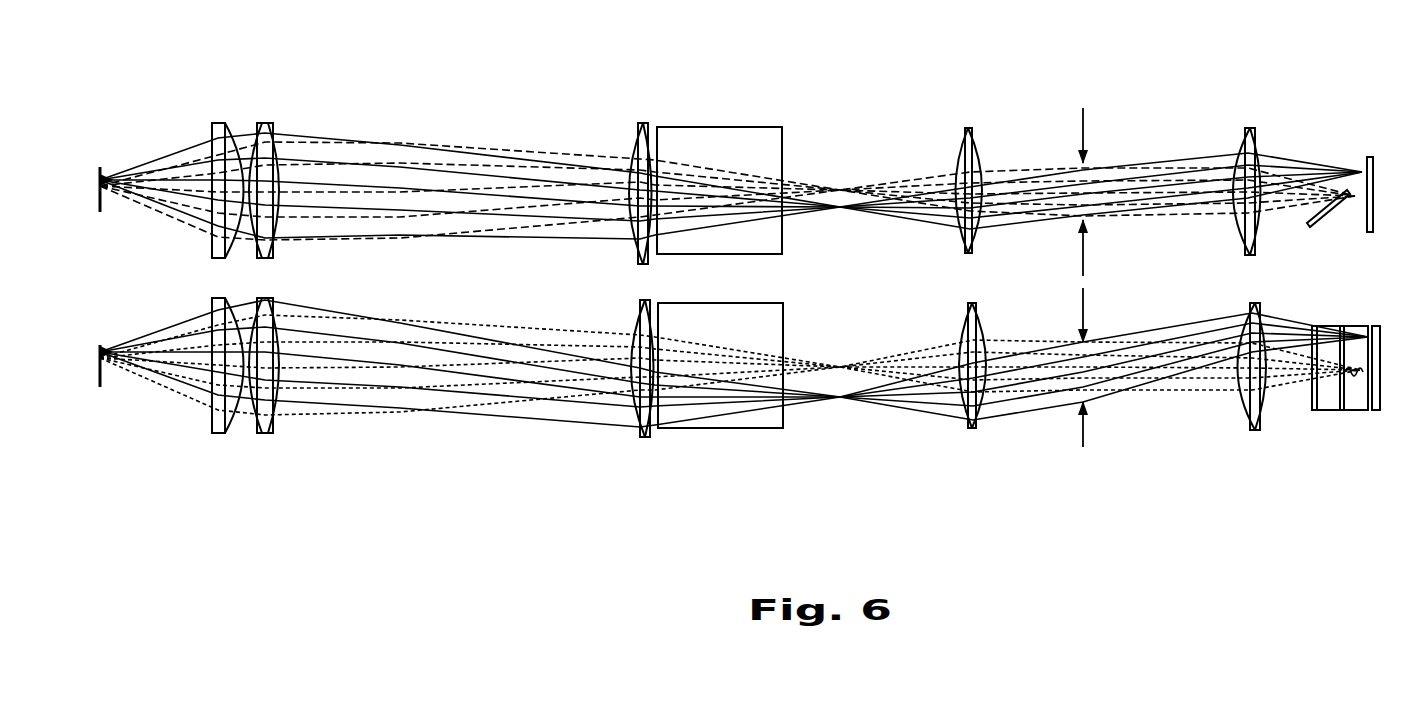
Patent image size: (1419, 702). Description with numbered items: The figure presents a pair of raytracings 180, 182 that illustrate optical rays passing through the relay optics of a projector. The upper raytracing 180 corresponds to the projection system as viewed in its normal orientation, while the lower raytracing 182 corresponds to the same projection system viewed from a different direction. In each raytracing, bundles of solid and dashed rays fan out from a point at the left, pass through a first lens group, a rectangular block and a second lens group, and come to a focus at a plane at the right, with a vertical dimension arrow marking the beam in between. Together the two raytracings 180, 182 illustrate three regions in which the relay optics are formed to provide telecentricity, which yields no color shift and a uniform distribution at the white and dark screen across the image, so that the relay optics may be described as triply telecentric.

The raytracing 180 is at (843, 128).
The raytracing 182 is at (856, 442).